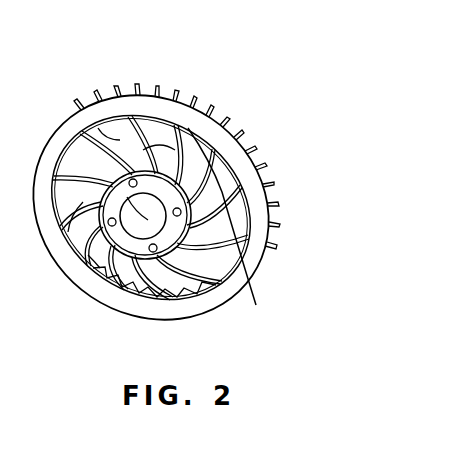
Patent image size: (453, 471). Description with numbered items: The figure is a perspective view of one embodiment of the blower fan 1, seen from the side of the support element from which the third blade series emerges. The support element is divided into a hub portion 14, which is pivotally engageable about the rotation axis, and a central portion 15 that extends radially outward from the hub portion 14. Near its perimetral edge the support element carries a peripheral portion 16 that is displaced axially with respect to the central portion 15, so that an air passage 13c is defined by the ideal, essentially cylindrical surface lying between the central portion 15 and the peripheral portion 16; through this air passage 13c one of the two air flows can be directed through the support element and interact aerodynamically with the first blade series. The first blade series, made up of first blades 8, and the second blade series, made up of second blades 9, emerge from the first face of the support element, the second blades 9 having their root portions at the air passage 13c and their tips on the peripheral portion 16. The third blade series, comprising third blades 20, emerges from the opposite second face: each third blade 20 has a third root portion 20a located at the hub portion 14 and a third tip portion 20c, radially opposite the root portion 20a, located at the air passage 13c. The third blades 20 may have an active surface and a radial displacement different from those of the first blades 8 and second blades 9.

The blower fan 1 is at (62, 343).
The first blades 8 is at (149, 85).
The second blades 9 is at (190, 93).
The air passage 13c is at (88, 255).
The hub portion 14 is at (138, 218).
The central portion 15 is at (83, 202).
The peripheral portion 16 is at (132, 302).
The third blades 20 is at (222, 183).
The third root portions 20a is at (143, 155).
The third tip portions 20c is at (104, 130).